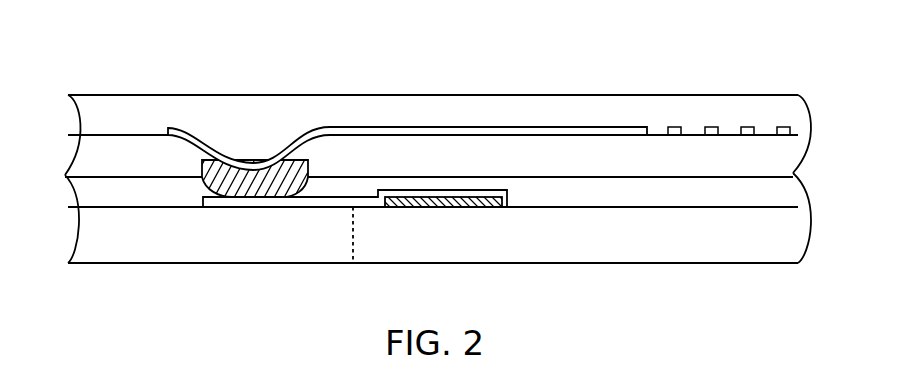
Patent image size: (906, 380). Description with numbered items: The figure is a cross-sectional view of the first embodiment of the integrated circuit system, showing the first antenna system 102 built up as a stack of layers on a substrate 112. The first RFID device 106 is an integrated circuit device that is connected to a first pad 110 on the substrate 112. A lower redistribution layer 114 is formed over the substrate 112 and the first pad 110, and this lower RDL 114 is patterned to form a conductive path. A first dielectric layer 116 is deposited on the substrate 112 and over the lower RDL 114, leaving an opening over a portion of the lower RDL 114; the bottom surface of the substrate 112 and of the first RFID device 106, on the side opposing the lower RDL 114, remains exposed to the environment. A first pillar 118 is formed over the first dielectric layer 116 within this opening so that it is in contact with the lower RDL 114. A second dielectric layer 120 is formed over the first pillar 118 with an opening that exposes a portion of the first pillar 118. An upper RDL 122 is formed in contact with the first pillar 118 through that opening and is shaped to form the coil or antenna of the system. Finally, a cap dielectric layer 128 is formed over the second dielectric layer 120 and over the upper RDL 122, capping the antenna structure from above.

The first antenna system 102 is at (93, 73).
The first RFID device 106 is at (662, 252).
The first pad 110 is at (415, 200).
The substrate 112 is at (122, 256).
The lower redistribution layer (RDL) 114 is at (330, 200).
The first dielectric layer 116 is at (125, 202).
The first pillar 118 is at (220, 177).
The second dielectric layer 120 is at (118, 172).
The upper RDL 122 is at (560, 133).
The cap dielectric layer 128 is at (135, 127).